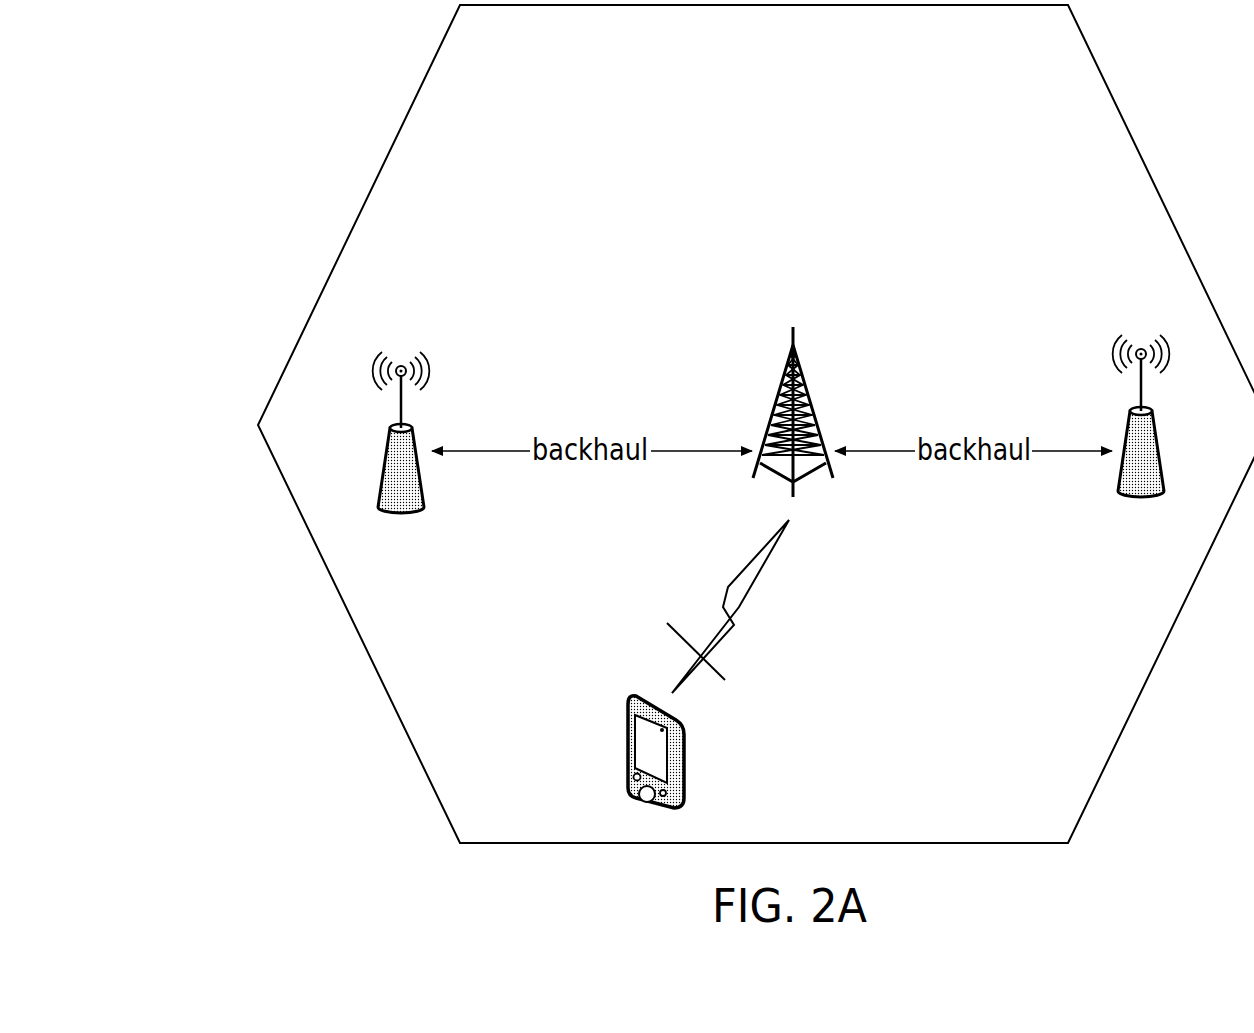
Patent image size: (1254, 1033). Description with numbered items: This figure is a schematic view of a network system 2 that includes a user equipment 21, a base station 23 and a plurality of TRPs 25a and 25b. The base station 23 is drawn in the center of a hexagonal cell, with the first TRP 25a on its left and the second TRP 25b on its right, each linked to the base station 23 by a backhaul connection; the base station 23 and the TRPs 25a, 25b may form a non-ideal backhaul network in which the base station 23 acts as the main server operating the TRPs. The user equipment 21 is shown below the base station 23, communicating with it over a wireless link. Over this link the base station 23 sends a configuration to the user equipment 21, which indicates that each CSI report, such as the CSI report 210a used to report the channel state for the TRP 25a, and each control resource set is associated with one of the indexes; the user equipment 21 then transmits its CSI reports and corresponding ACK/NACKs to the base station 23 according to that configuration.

The network system 2 is at (252, 167).
The user equipment 21 is at (686, 767).
The base station 23 is at (810, 417).
The TRP 25a is at (404, 515).
The TRP 25b is at (1128, 410).
The CSI report 210a is at (697, 647).